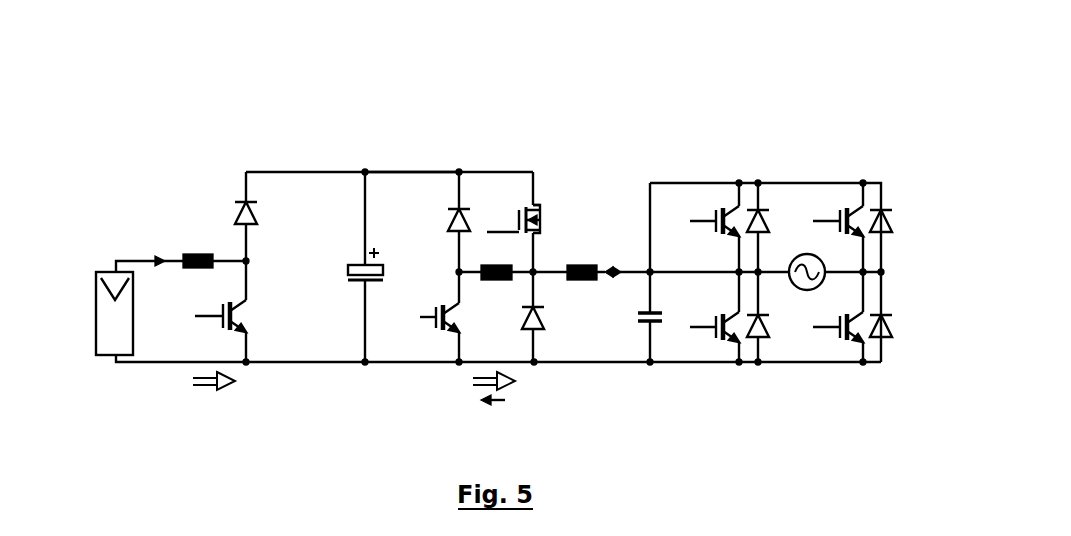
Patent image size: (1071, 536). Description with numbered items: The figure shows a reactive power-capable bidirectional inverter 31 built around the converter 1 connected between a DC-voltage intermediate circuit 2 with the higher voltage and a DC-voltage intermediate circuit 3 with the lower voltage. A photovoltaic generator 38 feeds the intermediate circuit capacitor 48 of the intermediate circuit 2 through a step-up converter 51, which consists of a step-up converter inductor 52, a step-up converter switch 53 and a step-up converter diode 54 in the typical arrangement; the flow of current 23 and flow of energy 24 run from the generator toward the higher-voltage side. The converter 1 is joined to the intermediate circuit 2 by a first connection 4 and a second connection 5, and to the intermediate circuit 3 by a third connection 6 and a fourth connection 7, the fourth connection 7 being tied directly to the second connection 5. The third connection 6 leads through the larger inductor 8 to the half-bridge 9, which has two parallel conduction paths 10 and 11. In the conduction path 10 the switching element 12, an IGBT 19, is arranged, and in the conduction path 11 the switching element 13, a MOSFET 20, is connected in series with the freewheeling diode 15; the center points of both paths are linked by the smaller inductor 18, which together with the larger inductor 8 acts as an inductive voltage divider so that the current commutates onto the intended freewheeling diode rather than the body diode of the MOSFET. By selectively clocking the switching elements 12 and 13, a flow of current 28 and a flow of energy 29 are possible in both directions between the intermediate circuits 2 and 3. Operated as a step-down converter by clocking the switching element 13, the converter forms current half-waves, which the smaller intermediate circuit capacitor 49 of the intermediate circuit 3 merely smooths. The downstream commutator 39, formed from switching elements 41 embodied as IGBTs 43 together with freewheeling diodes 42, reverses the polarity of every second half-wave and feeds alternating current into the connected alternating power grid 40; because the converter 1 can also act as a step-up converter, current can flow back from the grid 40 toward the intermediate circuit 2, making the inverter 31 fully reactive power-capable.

The converter 1 is at (415, 133).
The DC-voltage intermediate circuit 2 is at (362, 168).
The DC-voltage intermediate circuit 3 is at (641, 368).
The first connection 4 is at (366, 171).
The second connection 5 is at (366, 364).
The third connection 6 is at (652, 271).
The fourth connection 7 is at (534, 364).
The larger (first) inductor 8 is at (583, 264).
The half-bridge 9 is at (551, 201).
The conduction path 10 is at (459, 169).
The conduction path 11 is at (538, 167).
The switching element 12 is at (445, 344).
The switching element 13 is at (525, 203).
The freewheeling diode 15 is at (541, 339).
The smaller (second) inductor 18 is at (487, 263).
The IGBT 19 is at (433, 344).
The MOSFET 20 is at (548, 222).
The flow of current 23 is at (160, 253).
The flow of energy 24 is at (209, 391).
The flow of current 28 is at (613, 265).
The flow of energy 29 is at (490, 408).
The inverter 31 is at (620, 62).
The photovoltaic generator 38 is at (103, 265).
The commutator 39 is at (806, 155).
The alternating power grid 40 is at (829, 263).
The switching elements 41 is at (846, 198).
The freewheeling diodes 42 is at (767, 215).
The IGBTs 43 is at (719, 200).
The intermediate circuit capacitor 48 is at (355, 292).
The intermediate circuit capacitor 49 is at (658, 329).
The step-up converter 51 is at (222, 210).
The step-up converter inductor 52 is at (198, 256).
The step-up converter switch 53 is at (250, 321).
The step-up converter diode 54 is at (258, 204).